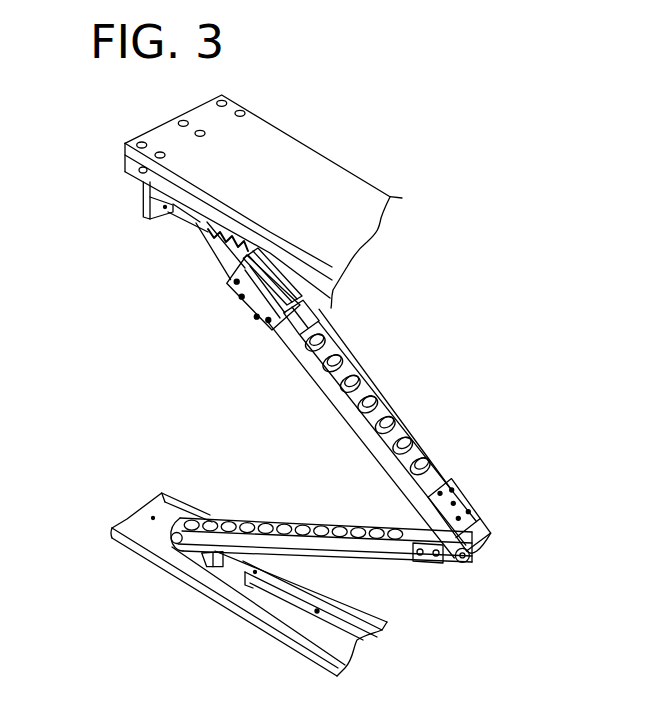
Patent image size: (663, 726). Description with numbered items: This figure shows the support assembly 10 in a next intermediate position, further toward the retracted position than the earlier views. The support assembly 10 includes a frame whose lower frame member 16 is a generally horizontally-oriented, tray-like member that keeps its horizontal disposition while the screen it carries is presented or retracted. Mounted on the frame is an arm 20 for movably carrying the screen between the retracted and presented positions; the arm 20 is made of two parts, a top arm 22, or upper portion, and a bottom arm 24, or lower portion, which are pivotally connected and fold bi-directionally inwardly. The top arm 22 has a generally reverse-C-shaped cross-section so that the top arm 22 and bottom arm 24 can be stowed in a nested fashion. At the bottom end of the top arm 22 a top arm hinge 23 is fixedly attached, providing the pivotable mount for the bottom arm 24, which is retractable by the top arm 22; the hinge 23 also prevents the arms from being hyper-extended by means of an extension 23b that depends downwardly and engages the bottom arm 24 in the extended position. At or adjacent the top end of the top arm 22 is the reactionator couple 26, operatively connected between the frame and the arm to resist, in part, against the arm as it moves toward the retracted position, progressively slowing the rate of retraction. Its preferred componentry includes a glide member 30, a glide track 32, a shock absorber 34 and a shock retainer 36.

The support assembly 10 is at (103, 152).
The lower frame member 16 is at (141, 520).
The arm 20 is at (405, 508).
The top arm 22 is at (310, 371).
The top arm hinge 23 is at (463, 502).
The extension 23b is at (490, 540).
The bottom arm 24 is at (270, 541).
The reactionator couple 26 is at (227, 323).
The glide member 30 is at (220, 243).
The glide track 32 is at (202, 225).
The shock absorber 34 is at (315, 322).
The shock retainer 36 is at (285, 272).